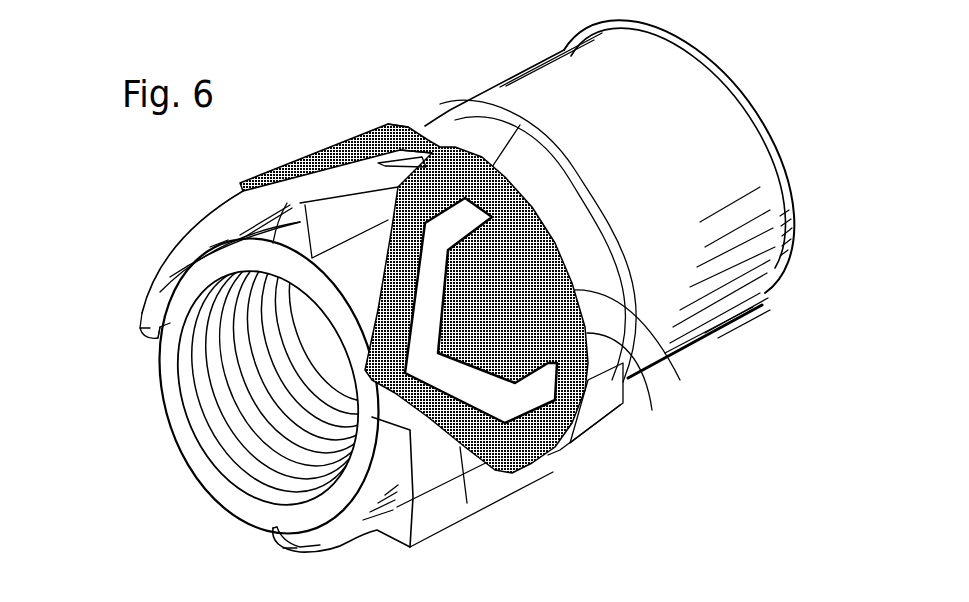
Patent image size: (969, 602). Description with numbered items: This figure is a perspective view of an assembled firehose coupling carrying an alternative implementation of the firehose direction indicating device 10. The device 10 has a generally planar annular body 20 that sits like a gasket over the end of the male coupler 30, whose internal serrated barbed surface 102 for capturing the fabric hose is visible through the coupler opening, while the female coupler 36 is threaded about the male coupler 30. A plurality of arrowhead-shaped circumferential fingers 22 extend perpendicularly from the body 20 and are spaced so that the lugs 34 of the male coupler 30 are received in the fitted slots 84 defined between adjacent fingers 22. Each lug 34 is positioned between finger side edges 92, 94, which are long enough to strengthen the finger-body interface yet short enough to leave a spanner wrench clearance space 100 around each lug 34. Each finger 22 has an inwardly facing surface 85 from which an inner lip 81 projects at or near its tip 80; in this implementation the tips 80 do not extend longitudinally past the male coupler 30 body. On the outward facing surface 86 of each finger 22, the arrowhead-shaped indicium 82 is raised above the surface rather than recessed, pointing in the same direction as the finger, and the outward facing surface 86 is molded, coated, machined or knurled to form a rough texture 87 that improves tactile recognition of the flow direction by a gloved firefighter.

The firehose direction indicating device 10 is at (523, 477).
The annular body 20 is at (650, 348).
The circumferential fingers 22 is at (148, 292).
The male coupler 30 is at (173, 400).
The lugs 34 is at (333, 200).
The female coupler 36 is at (527, 62).
The tips 80 is at (136, 323).
The inner lip 81 is at (147, 343).
The indicium 82 is at (550, 452).
The slots 84 is at (415, 125).
The inwardly facing surface 85 is at (185, 265).
The outward-facing surface 86 is at (618, 410).
The texture 87 is at (673, 350).
The finger side edge 92 is at (463, 134).
The finger side edge 94 is at (355, 135).
The spanner wrench clearance space 100 is at (265, 226).
The internal serrated barbed surface 102 is at (212, 437).